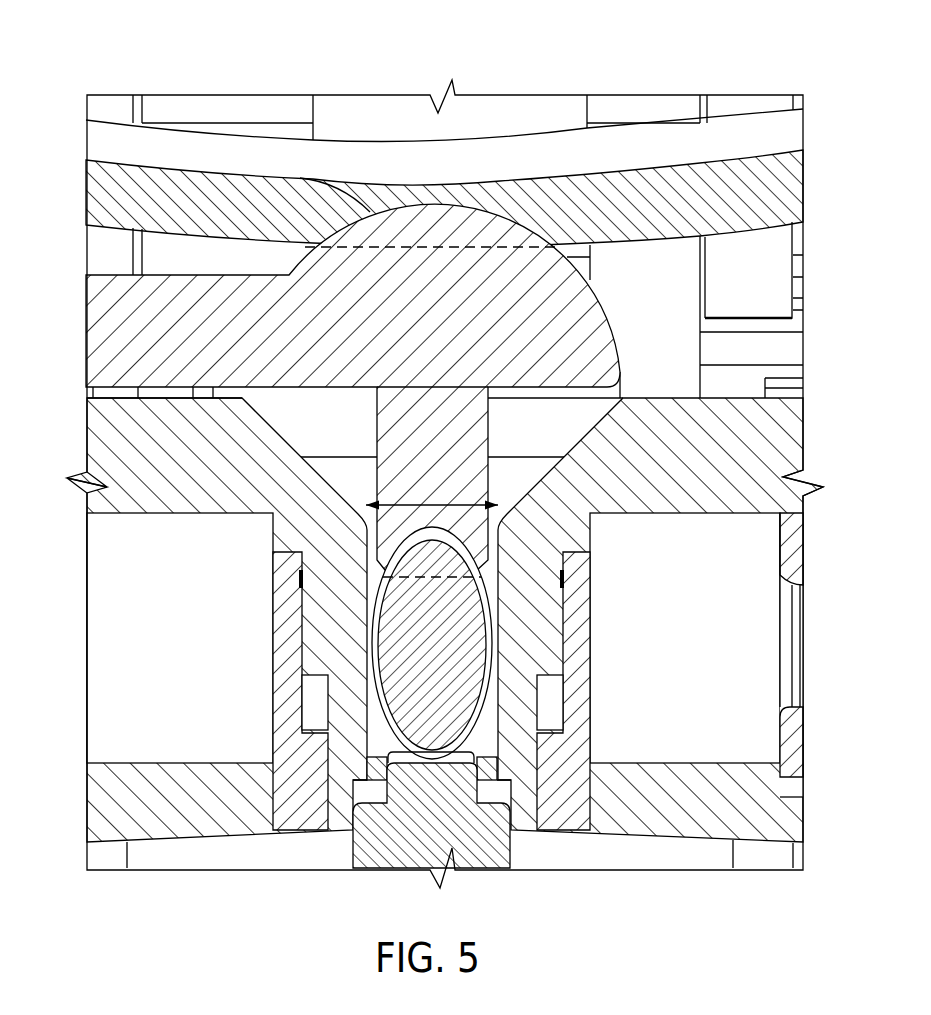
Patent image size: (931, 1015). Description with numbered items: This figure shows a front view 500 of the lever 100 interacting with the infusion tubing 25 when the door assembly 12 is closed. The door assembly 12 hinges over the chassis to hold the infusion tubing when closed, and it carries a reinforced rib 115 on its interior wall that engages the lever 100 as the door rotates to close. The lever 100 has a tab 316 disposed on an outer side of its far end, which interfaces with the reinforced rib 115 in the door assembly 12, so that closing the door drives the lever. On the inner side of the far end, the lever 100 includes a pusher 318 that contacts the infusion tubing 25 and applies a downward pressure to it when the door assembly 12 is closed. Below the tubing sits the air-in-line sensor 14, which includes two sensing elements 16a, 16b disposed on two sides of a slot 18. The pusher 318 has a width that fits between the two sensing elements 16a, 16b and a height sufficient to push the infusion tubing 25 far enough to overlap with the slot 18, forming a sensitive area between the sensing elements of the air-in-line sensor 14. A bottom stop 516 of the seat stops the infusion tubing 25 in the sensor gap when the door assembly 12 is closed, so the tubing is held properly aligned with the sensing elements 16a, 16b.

The front view 500 is at (104, 47).
The door assembly 12 is at (750, 145).
The reinforced rib 115 is at (786, 199).
The tab 316 is at (370, 212).
The lever 100 is at (318, 352).
The pusher 318 is at (405, 393).
The slot 18 is at (463, 500).
The air-in-line sensor 14 is at (716, 469).
The sensing element 16a is at (195, 649).
The sensing element 16b is at (723, 649).
The infusion tubing 25 is at (447, 659).
The bottom stop 516 is at (459, 835).